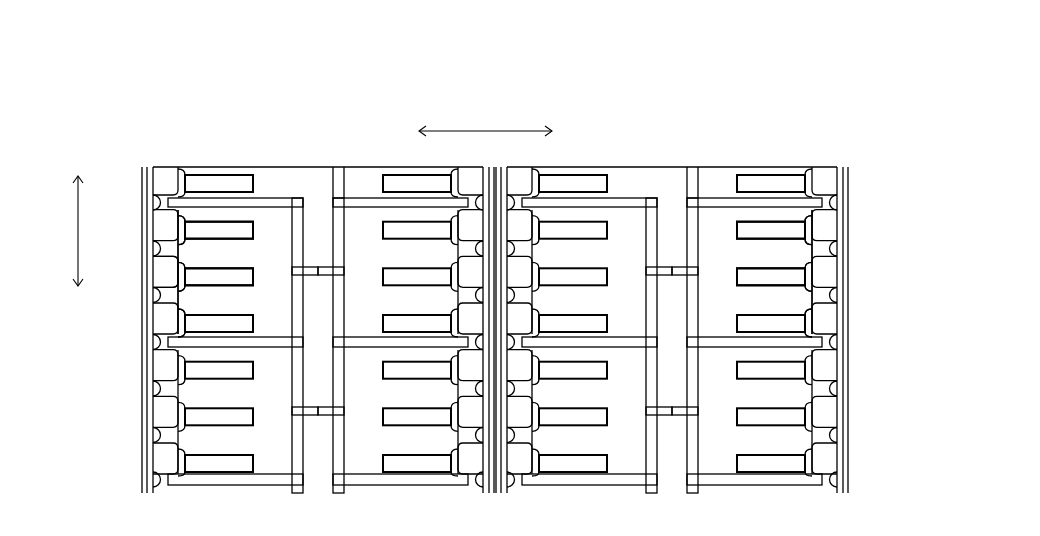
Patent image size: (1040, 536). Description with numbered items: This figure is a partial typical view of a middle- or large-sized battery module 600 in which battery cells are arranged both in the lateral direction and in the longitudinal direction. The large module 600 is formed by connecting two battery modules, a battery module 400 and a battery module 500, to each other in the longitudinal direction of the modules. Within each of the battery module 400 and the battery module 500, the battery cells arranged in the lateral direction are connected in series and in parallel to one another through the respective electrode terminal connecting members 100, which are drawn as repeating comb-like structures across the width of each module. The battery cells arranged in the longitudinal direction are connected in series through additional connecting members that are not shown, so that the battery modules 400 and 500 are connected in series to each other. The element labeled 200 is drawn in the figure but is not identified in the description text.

The middle- or large-sized battery module 600 is at (115, 82).
The battery module 400 is at (249, 143).
The battery module 500 is at (727, 147).
The electrode terminal connecting member 100 is at (185, 303).
The connecting member 200 is at (162, 274).